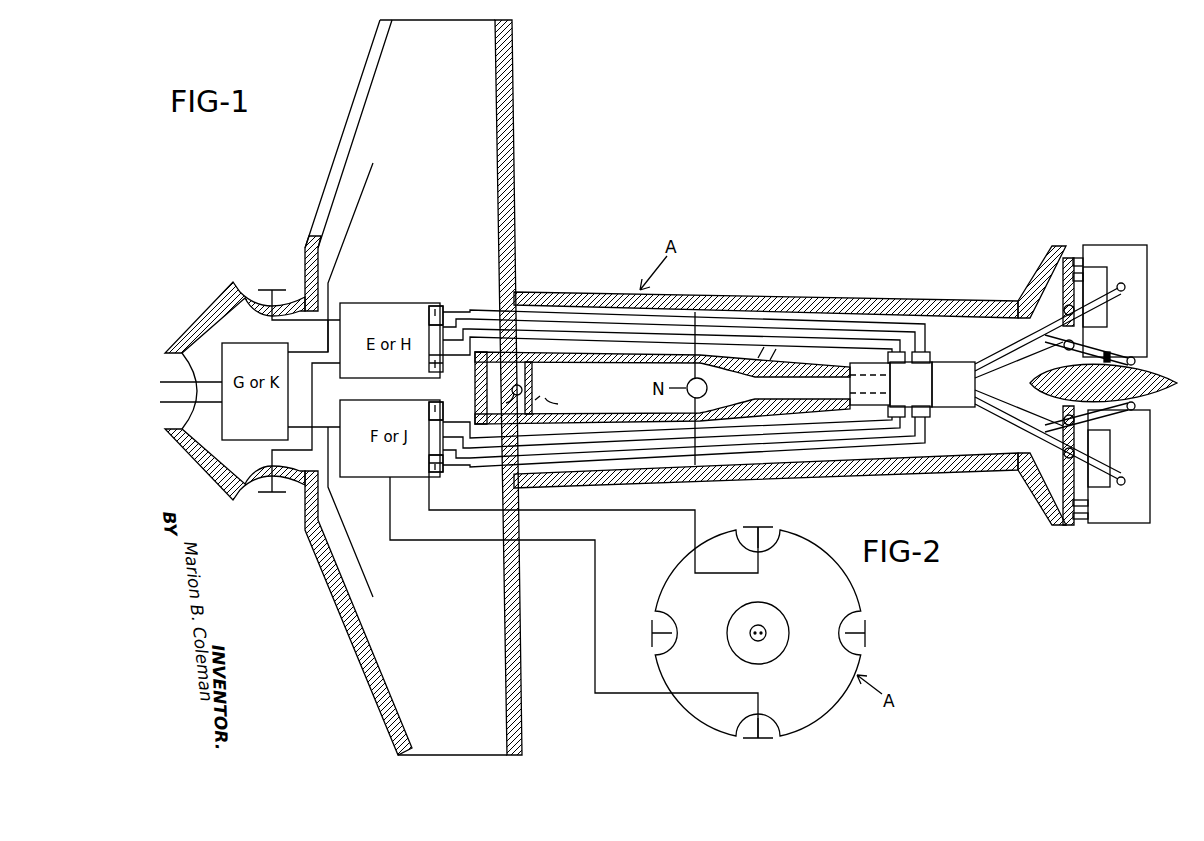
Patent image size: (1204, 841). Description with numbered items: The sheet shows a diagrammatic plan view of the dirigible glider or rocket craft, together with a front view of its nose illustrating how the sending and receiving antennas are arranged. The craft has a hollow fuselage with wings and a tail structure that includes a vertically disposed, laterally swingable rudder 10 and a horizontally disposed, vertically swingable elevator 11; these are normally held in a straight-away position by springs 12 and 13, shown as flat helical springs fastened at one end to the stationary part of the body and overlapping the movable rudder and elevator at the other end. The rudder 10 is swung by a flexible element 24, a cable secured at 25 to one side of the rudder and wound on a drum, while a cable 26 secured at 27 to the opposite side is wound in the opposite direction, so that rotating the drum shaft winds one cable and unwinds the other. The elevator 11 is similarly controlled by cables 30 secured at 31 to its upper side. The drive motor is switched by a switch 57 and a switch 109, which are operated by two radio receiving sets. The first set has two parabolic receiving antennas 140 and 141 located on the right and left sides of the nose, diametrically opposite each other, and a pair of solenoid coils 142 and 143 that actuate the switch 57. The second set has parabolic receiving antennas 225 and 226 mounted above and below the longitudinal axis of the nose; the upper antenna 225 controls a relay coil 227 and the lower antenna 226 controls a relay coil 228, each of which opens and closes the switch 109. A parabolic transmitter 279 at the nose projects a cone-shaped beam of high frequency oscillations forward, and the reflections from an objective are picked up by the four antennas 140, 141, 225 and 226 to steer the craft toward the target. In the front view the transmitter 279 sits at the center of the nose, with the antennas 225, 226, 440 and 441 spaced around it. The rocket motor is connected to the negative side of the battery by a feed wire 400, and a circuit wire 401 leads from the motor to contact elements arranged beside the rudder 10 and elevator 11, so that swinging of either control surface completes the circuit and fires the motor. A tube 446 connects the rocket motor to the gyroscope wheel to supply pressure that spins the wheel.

In FIG. 1, the rudder 10 is at (1150, 372).
In FIG. 1, the elevator 11 is at (1122, 513).
In FIG. 1, the spring 12 is at (1095, 360).
In FIG. 1, the spring 13 is at (1102, 478).
In FIG. 1, the flexible element 24 is at (1128, 352).
In FIG. 1, the cable securing point 25 is at (1133, 358).
In FIG. 1, the cable 26 is at (1123, 416).
In FIG. 1, the cable securing point 27 is at (1135, 405).
In FIG. 1, the cables 30 is at (1040, 345).
In FIG. 1, the cable securing point 31 is at (1125, 285).
In FIG. 1, the switch 57 is at (432, 332).
In FIG. 1, the switch 109 is at (430, 436).
In FIG. 1, the parabolic receiving antenna 140 is at (262, 286).
In FIG. 1, the parabolic receiving antenna 141 is at (262, 490).
In FIG. 1, the solenoid coil 142 is at (436, 306).
In FIG. 1, the solenoid coil 143 is at (444, 362).
In FIG. 1, the relay coil 227 is at (437, 474).
In FIG. 1, the relay coil 228 is at (437, 400).
In FIG. 1, the parabolic transmitter 279 is at (158, 378).
In FIG. 2, the parabolic transmitter 279 is at (775, 632).
In FIG. 1, the feed wire 400 is at (983, 447).
In FIG. 1, the circuit wire 401 is at (987, 323).
In FIG. 1, the tube 446 is at (768, 355).
In FIG. 2, the parabolic receiving antenna 225 is at (770, 540).
In FIG. 2, the parabolic receiving antenna 226 is at (770, 730).
In FIG. 2, the left valve port 440 is at (668, 628).
In FIG. 2, the right valve port 441 is at (855, 622).